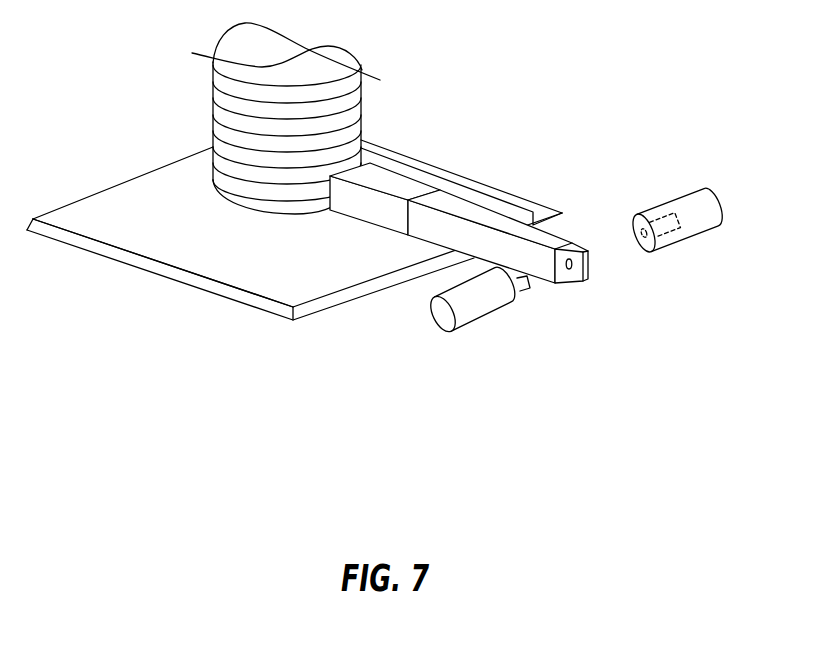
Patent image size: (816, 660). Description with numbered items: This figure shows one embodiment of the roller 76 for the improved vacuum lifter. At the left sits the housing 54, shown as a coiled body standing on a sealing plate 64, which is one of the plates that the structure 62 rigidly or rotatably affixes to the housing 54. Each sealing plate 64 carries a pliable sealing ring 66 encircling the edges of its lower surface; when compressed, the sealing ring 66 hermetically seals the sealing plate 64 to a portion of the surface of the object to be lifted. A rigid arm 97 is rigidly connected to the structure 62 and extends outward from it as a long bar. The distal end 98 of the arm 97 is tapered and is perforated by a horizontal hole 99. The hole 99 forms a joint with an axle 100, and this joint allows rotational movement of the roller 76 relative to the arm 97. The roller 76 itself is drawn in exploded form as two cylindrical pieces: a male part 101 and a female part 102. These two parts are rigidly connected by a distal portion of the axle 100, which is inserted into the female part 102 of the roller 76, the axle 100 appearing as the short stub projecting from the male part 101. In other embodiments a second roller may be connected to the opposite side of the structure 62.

The housing 54 is at (356, 107).
The structure 62 is at (410, 190).
The sealing plate 64 is at (183, 255).
The sealing ring 66 is at (220, 287).
The roller 76 is at (590, 316).
The rigid arm 97 is at (518, 262).
The distal end 98 is at (567, 270).
The horizontal hole 99 is at (564, 270).
The axle 100 is at (523, 283).
The male part 101 is at (478, 339).
The female part 102 is at (682, 255).